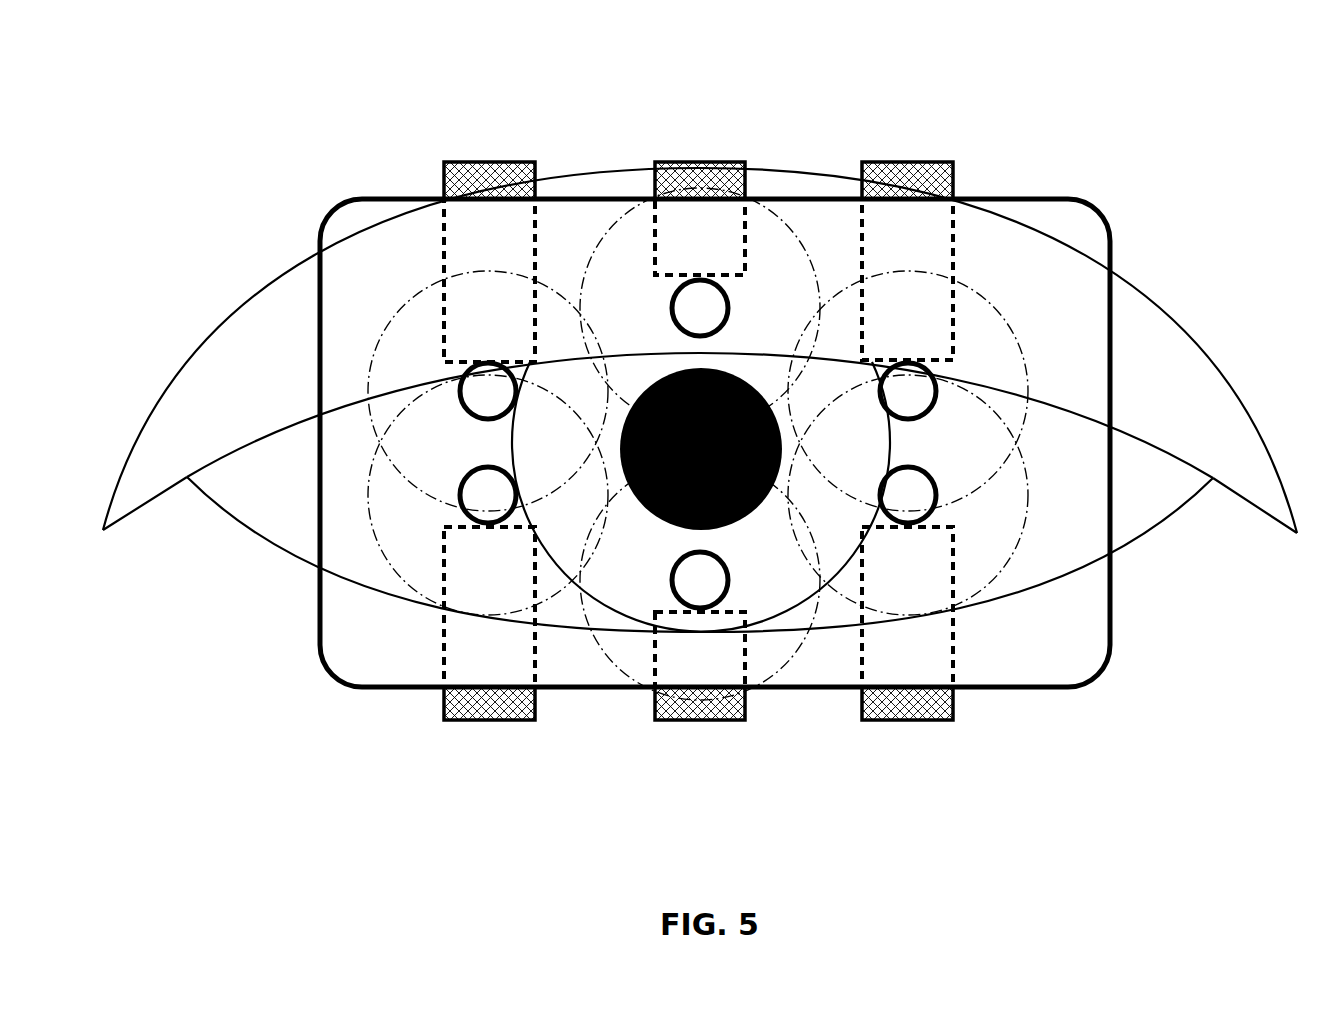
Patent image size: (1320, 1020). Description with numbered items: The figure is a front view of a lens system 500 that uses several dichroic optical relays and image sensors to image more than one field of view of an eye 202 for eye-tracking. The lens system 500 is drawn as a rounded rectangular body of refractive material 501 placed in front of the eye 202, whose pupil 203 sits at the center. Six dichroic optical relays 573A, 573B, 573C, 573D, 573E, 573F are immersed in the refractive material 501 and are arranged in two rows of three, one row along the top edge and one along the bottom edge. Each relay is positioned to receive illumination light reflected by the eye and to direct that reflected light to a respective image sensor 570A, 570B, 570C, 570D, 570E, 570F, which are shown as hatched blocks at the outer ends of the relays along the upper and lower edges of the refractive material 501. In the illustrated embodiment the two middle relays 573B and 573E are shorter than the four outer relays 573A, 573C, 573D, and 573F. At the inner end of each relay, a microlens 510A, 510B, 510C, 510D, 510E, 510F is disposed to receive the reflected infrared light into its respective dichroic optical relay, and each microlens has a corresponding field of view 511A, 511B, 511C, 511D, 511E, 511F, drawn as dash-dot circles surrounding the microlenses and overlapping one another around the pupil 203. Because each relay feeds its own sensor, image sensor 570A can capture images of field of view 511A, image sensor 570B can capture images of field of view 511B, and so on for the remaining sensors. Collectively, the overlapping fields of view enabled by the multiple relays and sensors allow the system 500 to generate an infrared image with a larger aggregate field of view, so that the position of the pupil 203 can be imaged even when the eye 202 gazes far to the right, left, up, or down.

The lens system 500 is at (1156, 40).
The refractive material 501 is at (370, 310).
The eye 202 is at (597, 604).
The pupil 203 is at (718, 460).
The microlens 510A is at (508, 400).
The microlens 510B is at (720, 317).
The microlens 510C is at (928, 400).
The microlens 510D is at (508, 504).
The microlens 510E is at (720, 589).
The microlens 510F is at (928, 504).
The field of view 511A is at (372, 342).
The field of view 511B is at (772, 214).
The field of view 511C is at (1030, 357).
The field of view 511D is at (368, 506).
The field of view 511E is at (615, 667).
The field of view 511F is at (1028, 518).
The image sensor 570A is at (496, 162).
The image sensor 570B is at (700, 162).
The image sensor 570C is at (913, 162).
The image sensor 570D is at (488, 720).
The image sensor 570E is at (684, 720).
The image sensor 570F is at (910, 720).
The dichroic optical relay 573A is at (440, 232).
The dichroic optical relay 573B is at (645, 250).
The dichroic optical relay 573C is at (955, 247).
The dichroic optical relay 573D is at (440, 668).
The dichroic optical relay 573E is at (745, 663).
The dichroic optical relay 573F is at (953, 665).